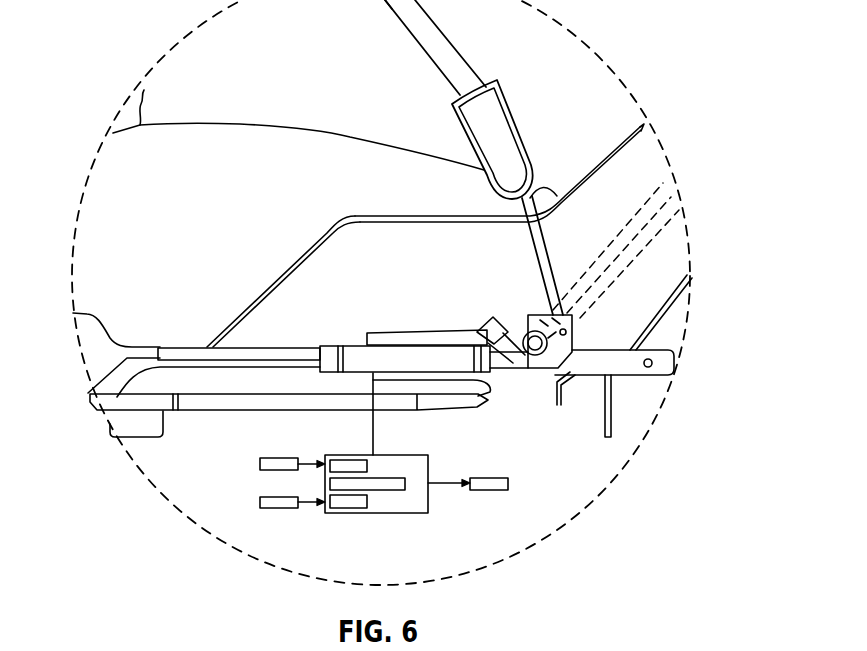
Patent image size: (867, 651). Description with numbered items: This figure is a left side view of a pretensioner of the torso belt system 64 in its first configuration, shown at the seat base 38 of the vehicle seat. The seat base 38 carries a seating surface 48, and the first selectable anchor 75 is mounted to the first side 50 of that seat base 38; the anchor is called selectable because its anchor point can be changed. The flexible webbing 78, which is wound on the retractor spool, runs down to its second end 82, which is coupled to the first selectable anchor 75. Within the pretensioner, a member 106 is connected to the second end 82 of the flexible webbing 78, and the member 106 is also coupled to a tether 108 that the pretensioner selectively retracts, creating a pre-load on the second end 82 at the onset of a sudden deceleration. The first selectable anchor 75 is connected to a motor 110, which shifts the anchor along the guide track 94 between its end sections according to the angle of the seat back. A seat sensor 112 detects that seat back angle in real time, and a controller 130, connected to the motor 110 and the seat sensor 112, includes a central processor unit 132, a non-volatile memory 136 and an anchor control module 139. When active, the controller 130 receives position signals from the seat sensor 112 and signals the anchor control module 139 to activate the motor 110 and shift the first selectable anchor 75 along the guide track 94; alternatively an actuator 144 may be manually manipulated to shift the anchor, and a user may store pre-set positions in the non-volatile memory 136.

The seat base 38 is at (109, 271).
The seating surface 48 is at (232, 125).
The torso belt system 64 is at (402, 167).
The first side 50 is at (297, 293).
The flexible webbing 78 is at (380, 14).
The second end 82 is at (423, 43).
The first selectable anchor 75 is at (514, 85).
The member 106 is at (513, 143).
The tether 108 is at (537, 232).
The guide track 94 is at (620, 288).
The controller 130 is at (436, 523).
The central processor unit 132 is at (353, 468).
The non-volatile memory 136 is at (387, 478).
The anchor control module 139 is at (343, 507).
The seat sensor 112 is at (258, 463).
The actuator 144 is at (258, 503).
The motor 110 is at (510, 483).